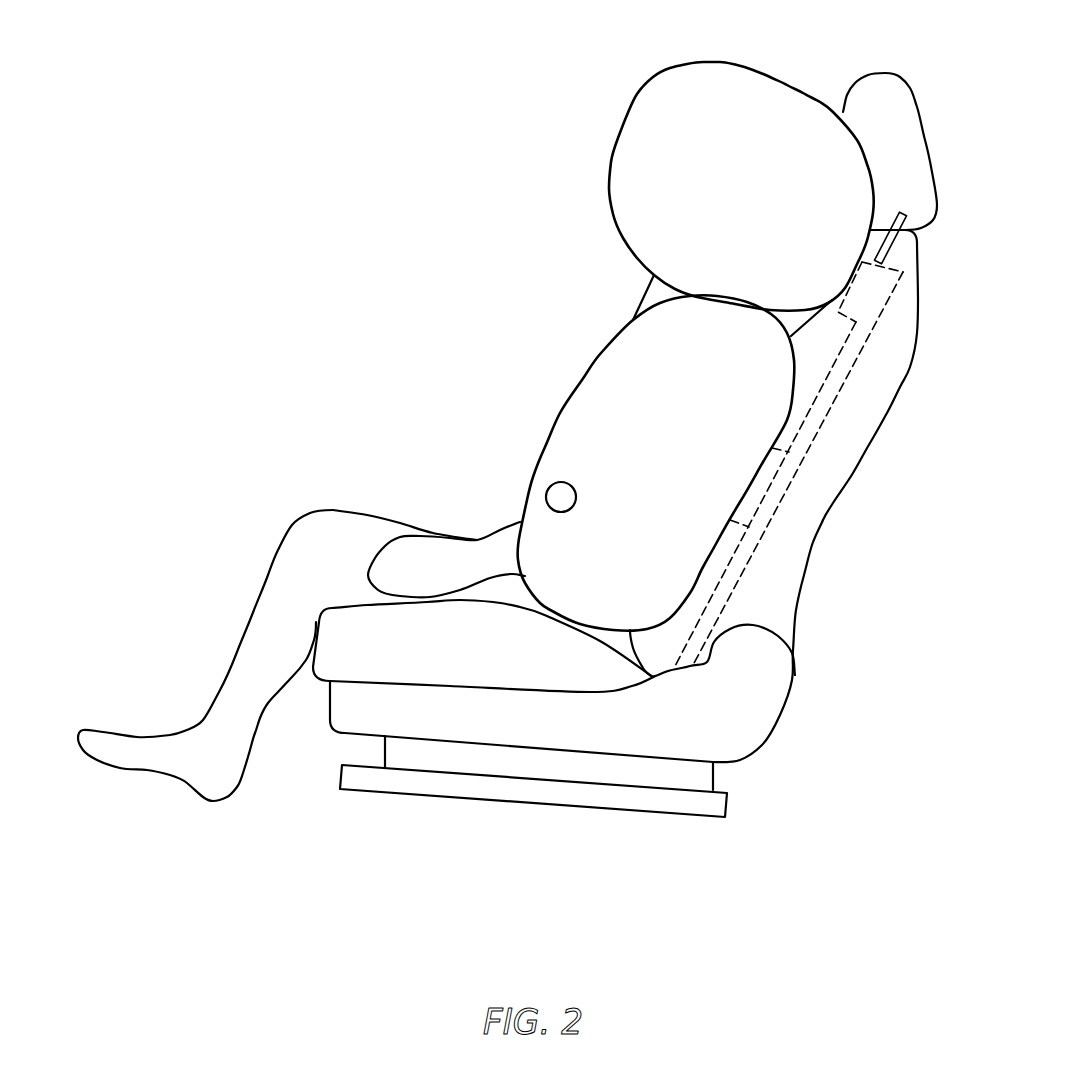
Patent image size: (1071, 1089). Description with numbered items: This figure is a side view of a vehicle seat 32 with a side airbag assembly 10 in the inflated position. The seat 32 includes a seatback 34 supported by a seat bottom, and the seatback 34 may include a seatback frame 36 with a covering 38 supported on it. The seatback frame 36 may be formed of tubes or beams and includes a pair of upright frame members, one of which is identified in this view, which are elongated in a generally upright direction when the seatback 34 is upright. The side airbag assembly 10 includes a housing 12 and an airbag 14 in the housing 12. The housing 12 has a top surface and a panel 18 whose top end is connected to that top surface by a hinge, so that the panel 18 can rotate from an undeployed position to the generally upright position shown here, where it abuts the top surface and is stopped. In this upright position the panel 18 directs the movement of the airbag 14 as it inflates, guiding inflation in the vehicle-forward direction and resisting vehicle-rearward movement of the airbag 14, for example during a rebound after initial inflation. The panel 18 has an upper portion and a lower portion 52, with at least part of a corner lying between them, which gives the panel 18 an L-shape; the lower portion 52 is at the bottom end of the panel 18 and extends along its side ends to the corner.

The side airbag assembly 10 is at (583, 64).
The housing 12 is at (837, 307).
The airbag 14 is at (607, 192).
The panel 18 is at (907, 215).
The seat 32 is at (812, 690).
The seatback 34 is at (804, 577).
The seatback frame 36 is at (790, 497).
The covering 38 is at (919, 297).
The lower portion 52 is at (893, 248).